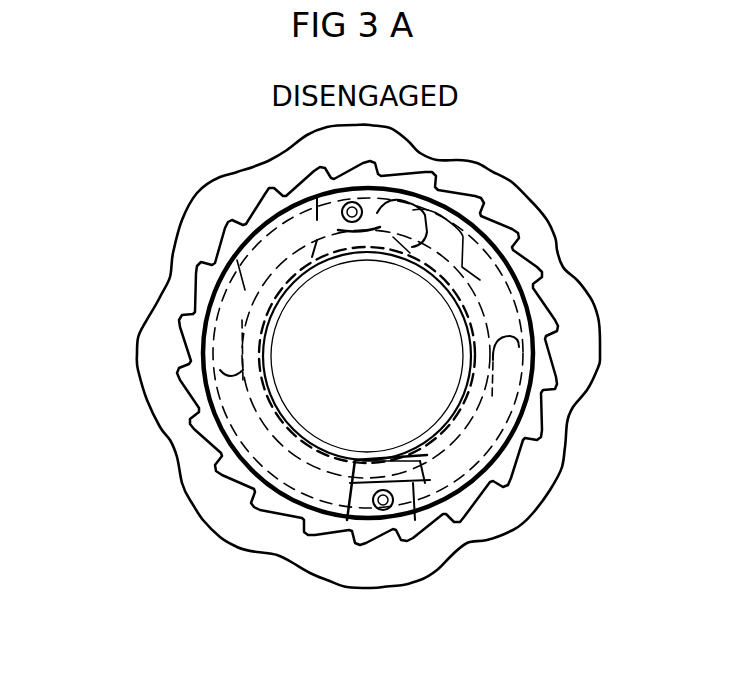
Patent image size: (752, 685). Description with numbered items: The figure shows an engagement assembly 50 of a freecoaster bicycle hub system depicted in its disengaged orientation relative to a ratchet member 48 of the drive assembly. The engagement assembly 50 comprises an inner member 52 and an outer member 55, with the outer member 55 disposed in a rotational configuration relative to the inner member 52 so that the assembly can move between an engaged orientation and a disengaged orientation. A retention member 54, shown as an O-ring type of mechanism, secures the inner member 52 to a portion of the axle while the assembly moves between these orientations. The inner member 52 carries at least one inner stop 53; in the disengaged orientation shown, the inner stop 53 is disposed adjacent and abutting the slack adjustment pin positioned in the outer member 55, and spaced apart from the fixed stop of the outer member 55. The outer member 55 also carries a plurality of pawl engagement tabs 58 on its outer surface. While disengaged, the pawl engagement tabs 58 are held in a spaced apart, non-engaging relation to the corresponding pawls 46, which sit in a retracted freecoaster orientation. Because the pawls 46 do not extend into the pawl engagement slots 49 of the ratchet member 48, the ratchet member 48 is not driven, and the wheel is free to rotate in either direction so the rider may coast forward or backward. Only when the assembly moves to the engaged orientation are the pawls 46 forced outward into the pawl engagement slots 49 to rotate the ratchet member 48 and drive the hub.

The pawls 46 is at (507, 350).
The ratchet member 48 is at (163, 432).
The pawl engagement slots 49 is at (227, 233).
The engagement assembly 50 is at (480, 143).
The inner member 52 is at (497, 507).
The inner stop 53 is at (338, 213).
The retention member 54 is at (340, 462).
The outer member 55 is at (535, 330).
The pawl engagement tabs 58 is at (403, 213).